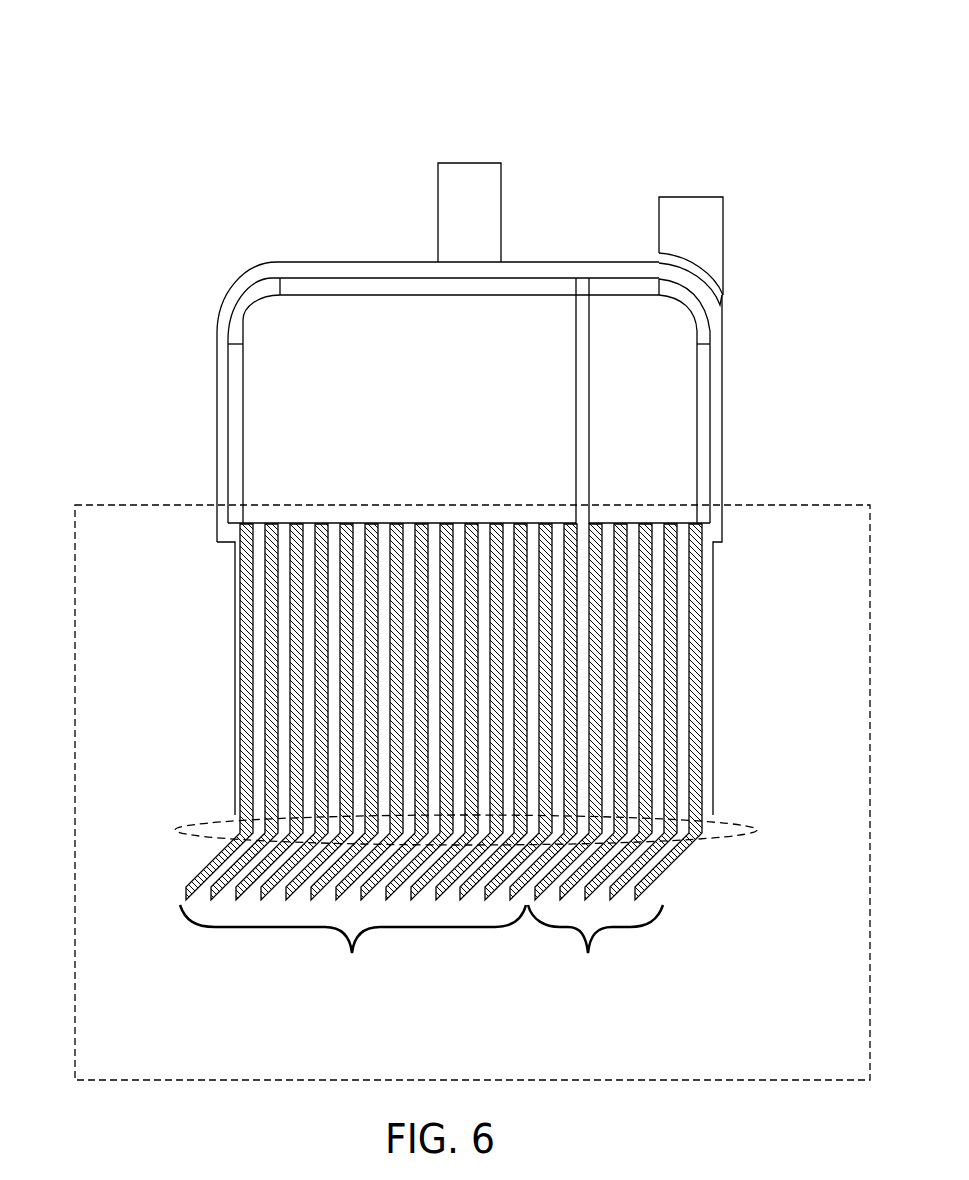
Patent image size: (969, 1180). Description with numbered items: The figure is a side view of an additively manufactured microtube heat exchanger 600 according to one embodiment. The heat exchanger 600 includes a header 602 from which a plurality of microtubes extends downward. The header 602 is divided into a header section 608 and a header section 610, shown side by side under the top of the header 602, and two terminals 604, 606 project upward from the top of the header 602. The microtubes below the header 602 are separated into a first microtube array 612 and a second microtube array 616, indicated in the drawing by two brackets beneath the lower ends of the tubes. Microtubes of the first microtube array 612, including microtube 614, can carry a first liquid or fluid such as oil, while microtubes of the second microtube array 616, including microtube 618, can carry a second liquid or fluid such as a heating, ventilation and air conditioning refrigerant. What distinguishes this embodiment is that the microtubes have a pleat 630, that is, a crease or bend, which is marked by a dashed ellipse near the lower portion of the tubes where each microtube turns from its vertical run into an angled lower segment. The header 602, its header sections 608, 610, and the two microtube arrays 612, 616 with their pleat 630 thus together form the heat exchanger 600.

The additively manufactured microtube heat exchanger 600 is at (148, 79).
The header 602 is at (250, 268).
The first terminal 604 is at (463, 162).
The second terminal 606 is at (683, 203).
The header section 608 is at (300, 379).
The header section 610 is at (650, 379).
The first microtube array 612 is at (338, 794).
The microtube 614 is at (270, 722).
The second microtube array 616 is at (685, 794).
The microtube 618 is at (680, 753).
The pleat 630 is at (740, 826).